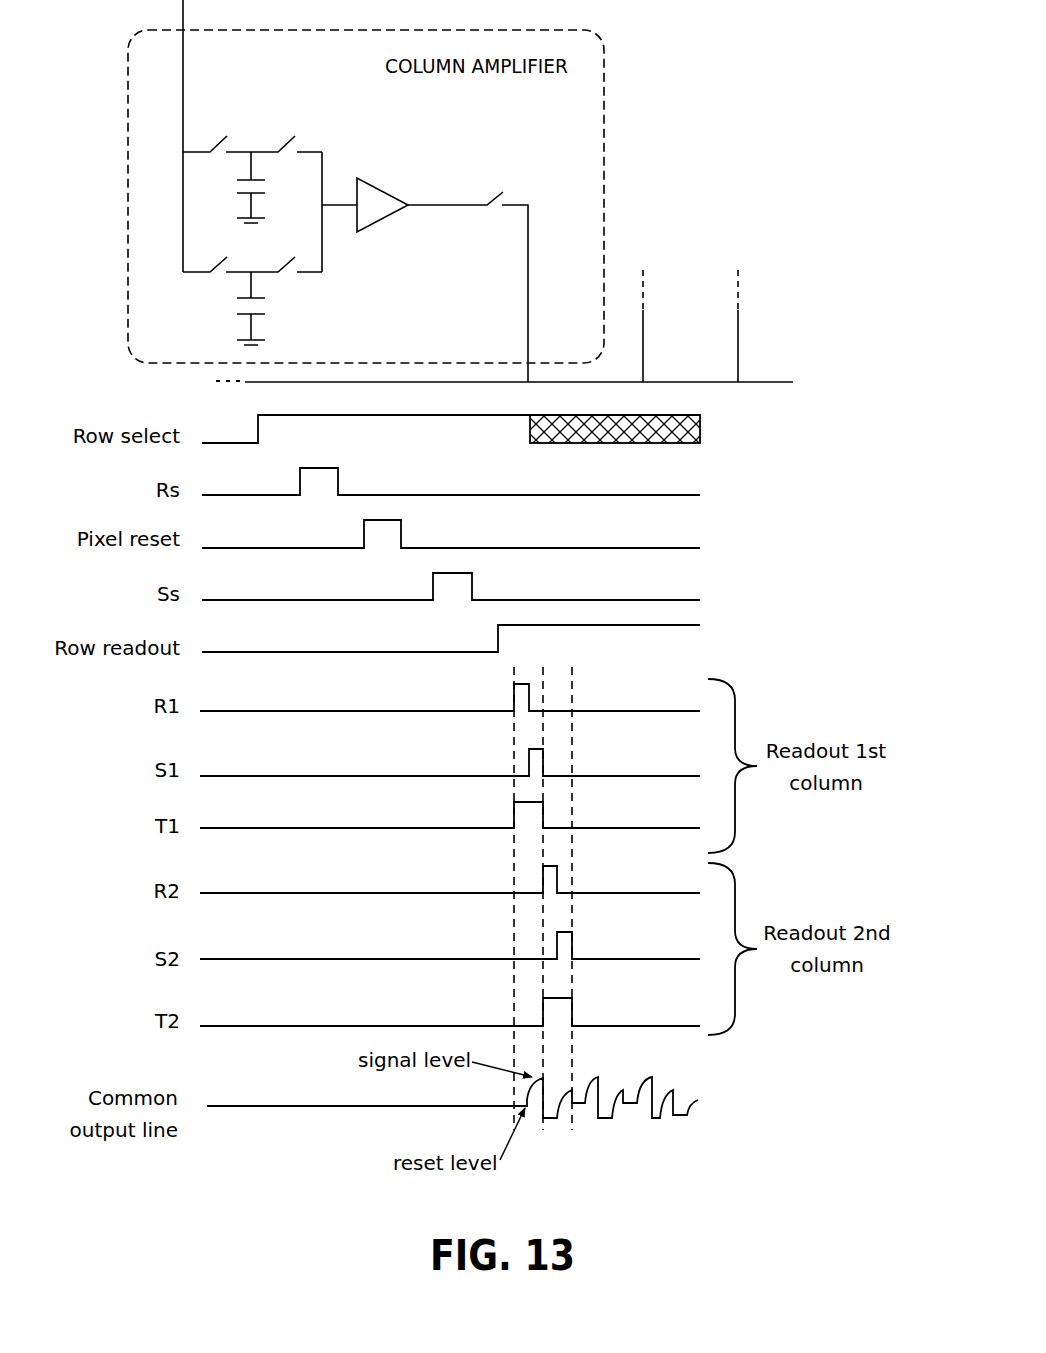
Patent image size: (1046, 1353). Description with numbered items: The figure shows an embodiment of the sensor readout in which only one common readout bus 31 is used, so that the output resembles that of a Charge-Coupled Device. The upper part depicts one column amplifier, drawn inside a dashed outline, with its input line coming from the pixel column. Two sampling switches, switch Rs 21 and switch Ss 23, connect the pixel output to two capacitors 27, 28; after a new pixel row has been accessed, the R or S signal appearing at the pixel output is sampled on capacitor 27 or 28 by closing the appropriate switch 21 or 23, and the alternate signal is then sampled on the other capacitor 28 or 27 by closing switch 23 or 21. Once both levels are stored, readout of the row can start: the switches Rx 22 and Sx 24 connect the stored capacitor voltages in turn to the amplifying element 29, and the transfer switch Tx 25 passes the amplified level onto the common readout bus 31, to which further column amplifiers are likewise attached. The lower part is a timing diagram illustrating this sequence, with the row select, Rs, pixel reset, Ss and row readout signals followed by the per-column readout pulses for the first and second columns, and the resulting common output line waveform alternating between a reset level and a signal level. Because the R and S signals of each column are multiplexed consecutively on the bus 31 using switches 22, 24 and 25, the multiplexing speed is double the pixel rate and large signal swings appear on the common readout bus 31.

The switch Rs 21 is at (230, 143).
The switch Rx 22 is at (302, 143).
The switch Ss 23 is at (220, 277).
The switch Sx 24 is at (290, 277).
The switch Tx 25 is at (508, 195).
The capacitor 27 is at (268, 186).
The capacitor 28 is at (235, 307).
The amplifying element 29 is at (375, 202).
The common readout bus 31 is at (773, 375).